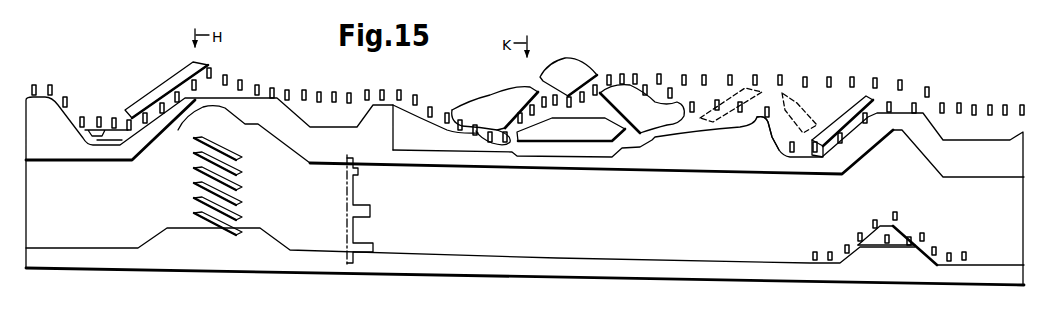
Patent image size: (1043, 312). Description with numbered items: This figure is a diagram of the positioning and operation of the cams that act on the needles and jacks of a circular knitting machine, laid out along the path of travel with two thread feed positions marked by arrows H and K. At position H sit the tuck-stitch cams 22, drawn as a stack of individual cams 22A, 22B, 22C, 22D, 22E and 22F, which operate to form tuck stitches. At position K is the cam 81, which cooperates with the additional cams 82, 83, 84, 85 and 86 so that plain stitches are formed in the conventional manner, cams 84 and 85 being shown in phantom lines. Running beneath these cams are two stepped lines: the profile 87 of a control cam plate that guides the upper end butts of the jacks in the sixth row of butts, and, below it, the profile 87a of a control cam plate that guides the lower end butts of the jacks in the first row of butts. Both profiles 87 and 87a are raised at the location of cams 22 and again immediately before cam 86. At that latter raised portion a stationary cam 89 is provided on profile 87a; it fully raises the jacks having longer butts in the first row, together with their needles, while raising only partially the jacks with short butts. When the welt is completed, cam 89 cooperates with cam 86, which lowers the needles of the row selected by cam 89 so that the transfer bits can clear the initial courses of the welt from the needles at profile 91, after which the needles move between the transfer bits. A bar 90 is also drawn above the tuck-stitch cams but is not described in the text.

The cams 22 is at (221, 198).
The cam 22A is at (228, 234).
The cam 22B is at (242, 214).
The cam 22C is at (246, 205).
The cam 22D is at (244, 188).
The cam 22E is at (242, 170).
The cam 22F is at (222, 145).
The cam 81 is at (482, 98).
The cam 82 is at (581, 68).
The cam 83 is at (628, 82).
The cam 84 is at (743, 88).
The cam 85 is at (803, 103).
The cam 86 is at (862, 97).
The control cam plate profile 87 is at (509, 174).
The control cam plate profile 87a is at (557, 256).
The stationary cam 89 is at (882, 226).
The bar element 90 is at (155, 88).
The profile 91 is at (771, 149).